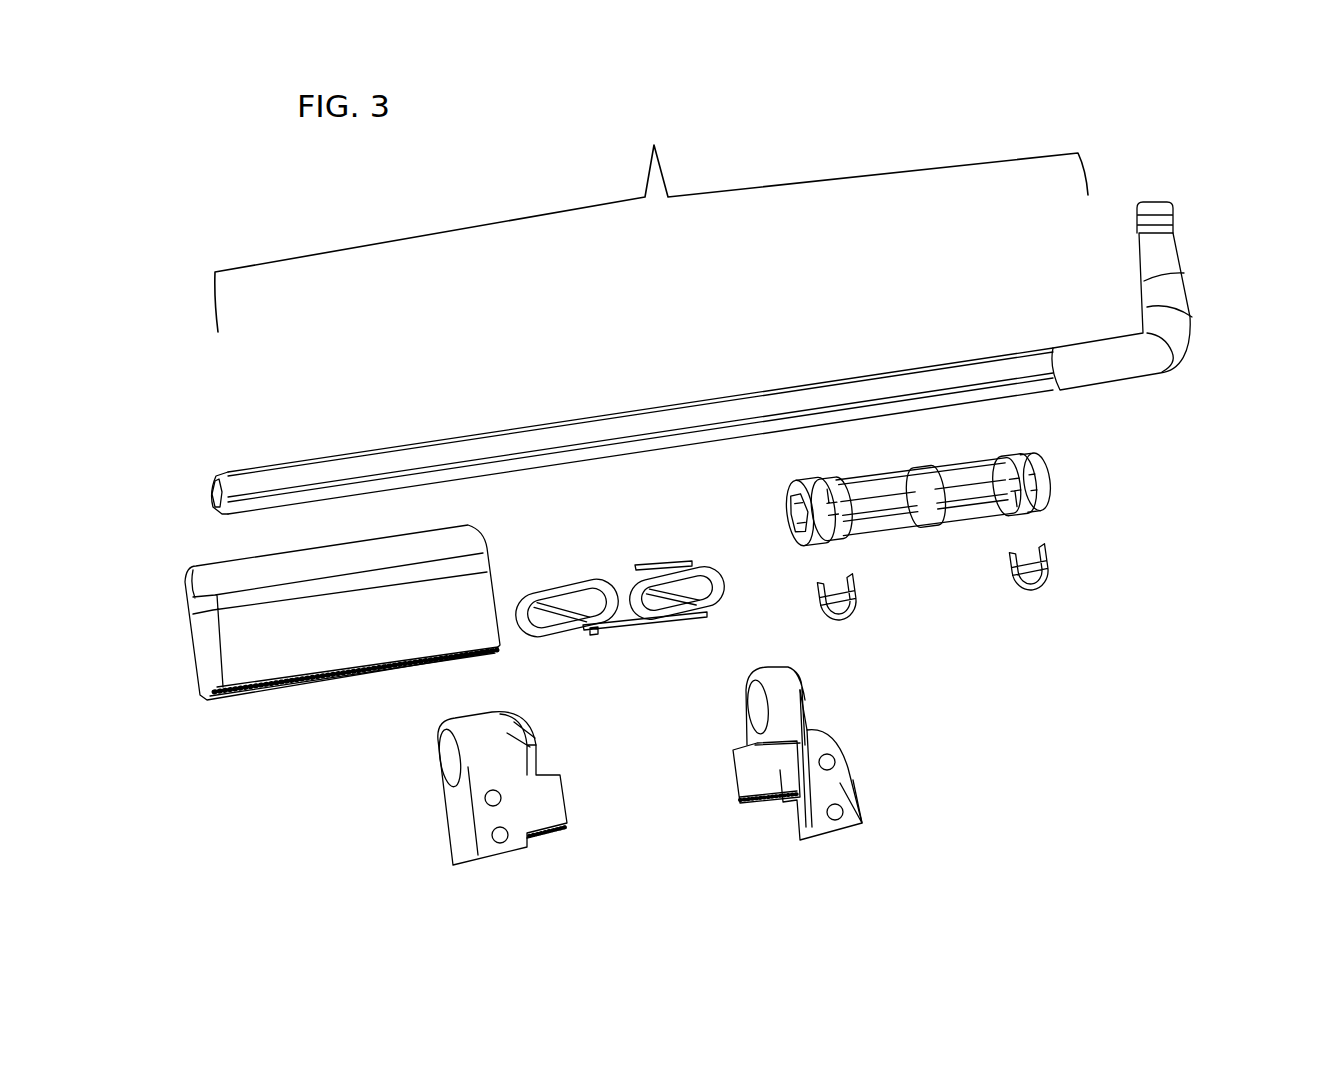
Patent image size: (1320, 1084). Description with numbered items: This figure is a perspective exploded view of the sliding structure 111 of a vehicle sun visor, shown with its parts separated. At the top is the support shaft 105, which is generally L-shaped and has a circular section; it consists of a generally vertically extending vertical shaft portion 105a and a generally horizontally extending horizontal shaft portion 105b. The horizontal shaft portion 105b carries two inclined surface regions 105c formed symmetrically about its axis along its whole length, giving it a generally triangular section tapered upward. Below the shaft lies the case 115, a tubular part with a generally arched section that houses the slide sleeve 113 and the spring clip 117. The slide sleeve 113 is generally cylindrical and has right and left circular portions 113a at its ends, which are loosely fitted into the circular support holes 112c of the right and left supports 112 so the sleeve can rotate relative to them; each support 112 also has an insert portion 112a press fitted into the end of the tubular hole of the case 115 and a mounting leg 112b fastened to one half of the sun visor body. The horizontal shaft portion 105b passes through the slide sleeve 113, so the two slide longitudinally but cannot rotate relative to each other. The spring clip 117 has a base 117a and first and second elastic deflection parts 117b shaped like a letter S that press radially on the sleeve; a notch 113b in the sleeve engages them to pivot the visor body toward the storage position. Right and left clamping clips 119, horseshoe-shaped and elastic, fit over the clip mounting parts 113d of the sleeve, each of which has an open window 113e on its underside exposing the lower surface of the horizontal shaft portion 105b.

The support shaft 105 is at (751, 312).
The vertical shaft portion 105a is at (1192, 290).
The horizontal shaft portion 105b is at (477, 432).
The inclined surface regions 105c is at (604, 432).
The sliding structure 111 is at (651, 215).
The supports 112 is at (647, 807).
The insert portion 112a is at (755, 790).
The mounting leg 112b is at (863, 813).
The circular support hole 112c is at (757, 710).
The slide sleeve 113 is at (921, 521).
The circular portions 113a is at (1040, 482).
The notch 113b is at (950, 483).
The clip mounting parts 113d is at (1015, 462).
The open window 113e is at (1030, 505).
The case 115 is at (185, 568).
The spring clip 117 is at (619, 607).
The base 117a is at (598, 641).
The elastic deflection parts 117b is at (660, 562).
The clamping clips 119 is at (1044, 592).